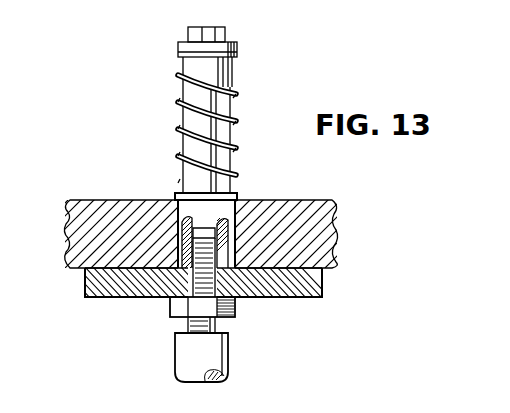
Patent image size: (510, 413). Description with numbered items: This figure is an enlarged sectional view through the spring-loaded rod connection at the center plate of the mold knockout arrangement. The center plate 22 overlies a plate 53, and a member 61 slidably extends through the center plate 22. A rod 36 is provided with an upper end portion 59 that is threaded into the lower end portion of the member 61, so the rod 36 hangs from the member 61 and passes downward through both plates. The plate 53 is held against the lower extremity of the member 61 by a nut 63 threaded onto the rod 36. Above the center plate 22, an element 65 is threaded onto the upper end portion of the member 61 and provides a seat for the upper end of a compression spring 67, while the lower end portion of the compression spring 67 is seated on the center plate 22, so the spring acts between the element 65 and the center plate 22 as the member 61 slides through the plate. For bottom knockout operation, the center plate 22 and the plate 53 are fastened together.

The center plate 22 is at (340, 218).
The plate 53 is at (322, 285).
The element 65 is at (232, 74).
The member 61 is at (178, 182).
The compression spring 67 is at (233, 175).
The upper end portion 59 is at (213, 325).
The nut 63 is at (168, 308).
The rod 36 is at (227, 362).